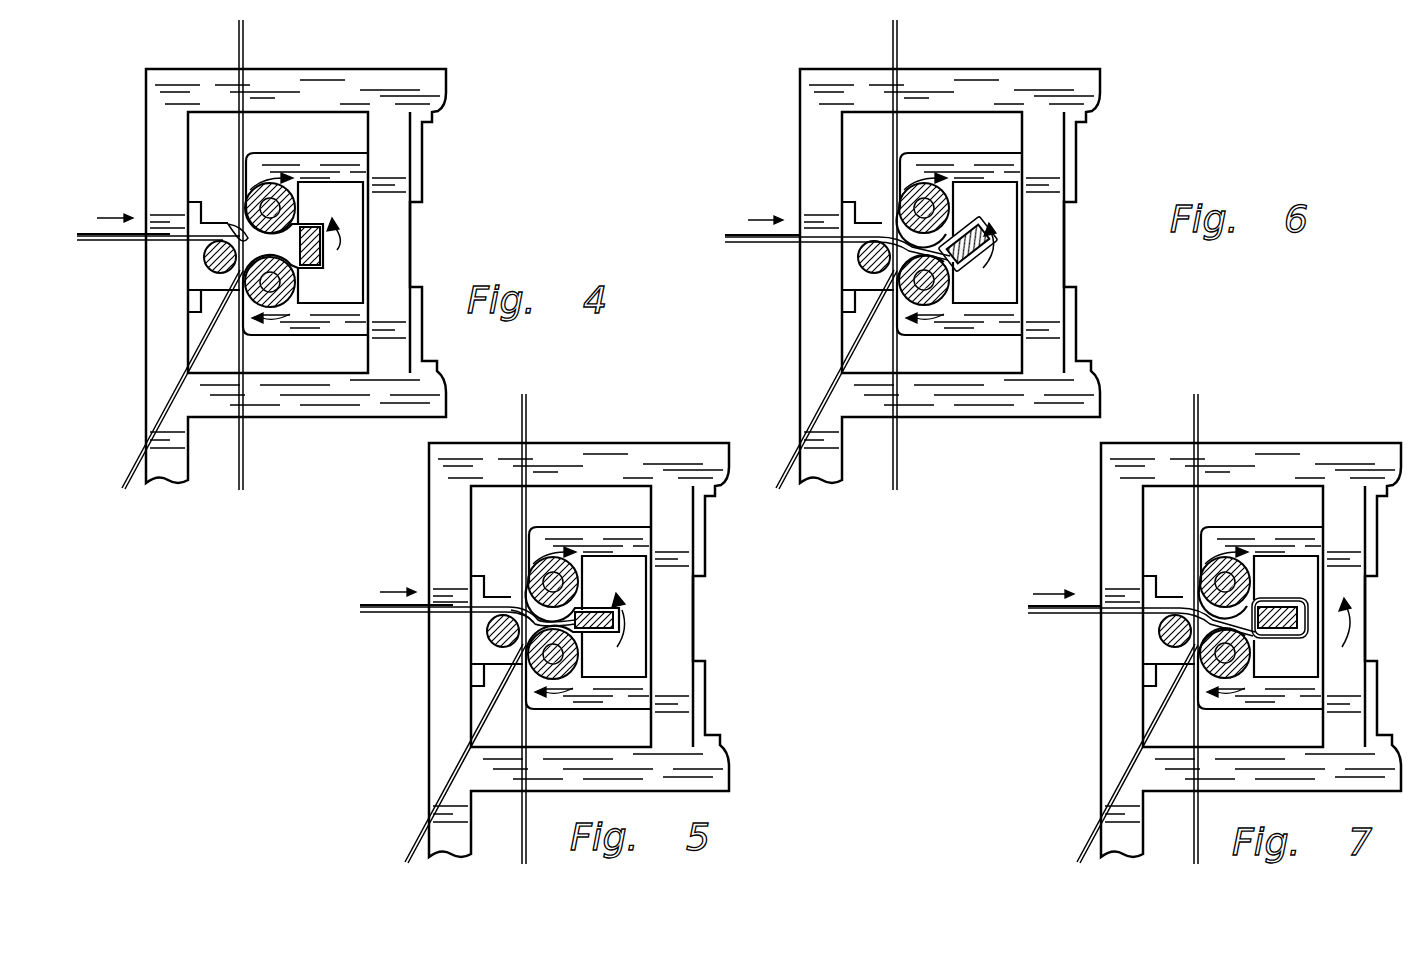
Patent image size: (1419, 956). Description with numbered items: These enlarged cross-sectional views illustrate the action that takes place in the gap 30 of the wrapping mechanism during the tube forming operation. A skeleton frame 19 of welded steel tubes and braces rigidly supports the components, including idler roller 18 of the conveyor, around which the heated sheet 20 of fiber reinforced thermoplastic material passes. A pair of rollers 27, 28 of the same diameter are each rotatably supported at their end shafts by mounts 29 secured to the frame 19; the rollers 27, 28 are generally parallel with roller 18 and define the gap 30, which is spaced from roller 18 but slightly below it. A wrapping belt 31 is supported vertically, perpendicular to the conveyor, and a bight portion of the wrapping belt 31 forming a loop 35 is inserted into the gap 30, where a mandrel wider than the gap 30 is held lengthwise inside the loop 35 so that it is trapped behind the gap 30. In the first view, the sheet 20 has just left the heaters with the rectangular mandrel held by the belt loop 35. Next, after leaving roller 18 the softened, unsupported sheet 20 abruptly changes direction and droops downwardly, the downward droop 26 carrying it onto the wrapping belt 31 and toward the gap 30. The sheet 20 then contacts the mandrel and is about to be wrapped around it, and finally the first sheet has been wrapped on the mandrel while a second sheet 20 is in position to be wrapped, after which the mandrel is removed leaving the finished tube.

In FIG. 4, the idler roller 18 is at (205, 258).
In FIG. 5, the idler roller 18 is at (452, 641).
In FIG. 6, the idler roller 18 is at (822, 267).
In FIG. 7, the idler roller 18 is at (1124, 641).
In FIG. 4, the skeleton frame 19 is at (193, 68).
In FIG. 4, the sheet 20 is at (92, 232).
In FIG. 5, the sheet 20 is at (467, 584).
In FIG. 6, the sheet 20 is at (837, 214).
In FIG. 5, the downward droop 26 is at (506, 580).
In FIG. 6, the downward droop 26 is at (967, 231).
In FIG. 7, the downward droop 26 is at (1280, 601).
In FIG. 4, the roller 27 is at (296, 284).
In FIG. 5, the roller 27 is at (582, 654).
In FIG. 4, the roller 28 is at (296, 210).
In FIG. 5, the roller 28 is at (580, 582).
In FIG. 4, the mount 29 is at (327, 153).
In FIG. 5, the mount 29 is at (588, 621).
In FIG. 4, the gap 30 is at (240, 232).
In FIG. 4, the wrapping belt 31 is at (190, 362).
In FIG. 5, the wrapping belt 31 is at (456, 753).
In FIG. 4, the loop 35 is at (333, 250).
In FIG. 5, the loop 35 is at (674, 620).
In FIG. 6, the loop 35 is at (1038, 245).
In FIG. 7, the loop 35 is at (1356, 622).